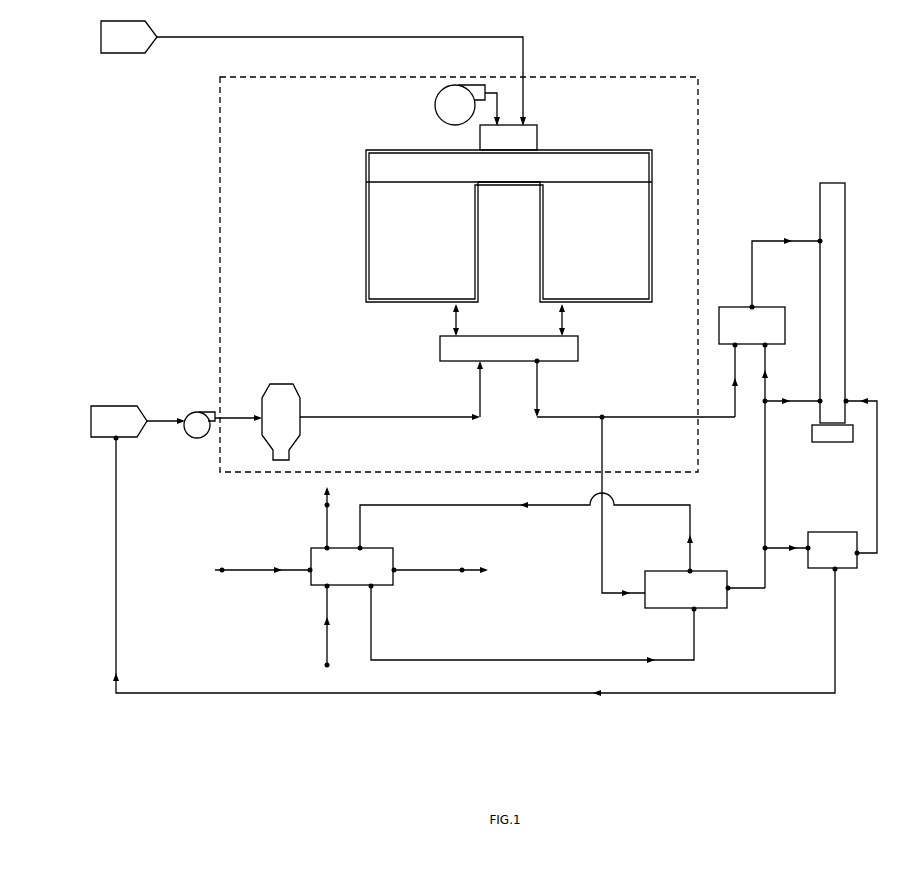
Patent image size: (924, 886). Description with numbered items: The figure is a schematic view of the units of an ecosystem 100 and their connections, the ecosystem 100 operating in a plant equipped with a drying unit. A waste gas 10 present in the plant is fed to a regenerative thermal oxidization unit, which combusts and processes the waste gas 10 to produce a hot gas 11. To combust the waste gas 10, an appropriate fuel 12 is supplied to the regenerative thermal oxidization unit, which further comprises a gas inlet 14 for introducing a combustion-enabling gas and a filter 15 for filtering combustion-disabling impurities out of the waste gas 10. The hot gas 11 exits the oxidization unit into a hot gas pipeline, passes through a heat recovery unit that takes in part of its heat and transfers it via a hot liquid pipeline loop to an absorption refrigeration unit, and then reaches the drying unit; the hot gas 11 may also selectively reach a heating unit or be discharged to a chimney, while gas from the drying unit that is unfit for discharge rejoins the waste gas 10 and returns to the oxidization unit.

The ecosystem 100 is at (777, 97).
The waste gas 10 is at (119, 421).
The hot gas 11 is at (569, 409).
The fuel 12 is at (313, 73).
The gas inlet 14 is at (467, 105).
The filter 15 is at (281, 422).